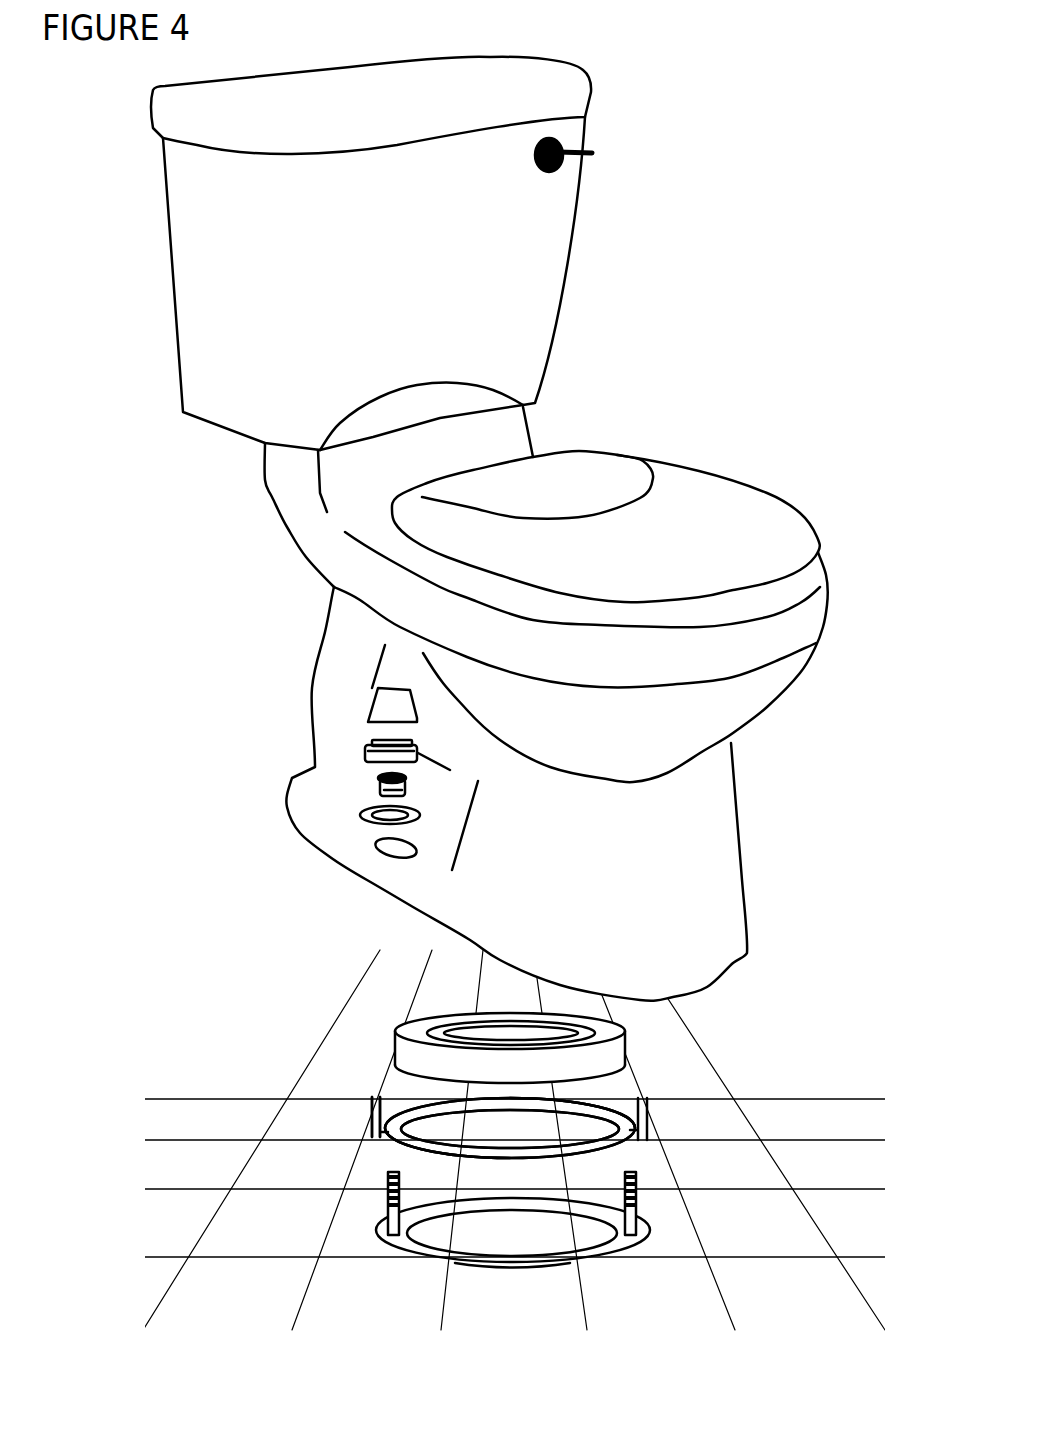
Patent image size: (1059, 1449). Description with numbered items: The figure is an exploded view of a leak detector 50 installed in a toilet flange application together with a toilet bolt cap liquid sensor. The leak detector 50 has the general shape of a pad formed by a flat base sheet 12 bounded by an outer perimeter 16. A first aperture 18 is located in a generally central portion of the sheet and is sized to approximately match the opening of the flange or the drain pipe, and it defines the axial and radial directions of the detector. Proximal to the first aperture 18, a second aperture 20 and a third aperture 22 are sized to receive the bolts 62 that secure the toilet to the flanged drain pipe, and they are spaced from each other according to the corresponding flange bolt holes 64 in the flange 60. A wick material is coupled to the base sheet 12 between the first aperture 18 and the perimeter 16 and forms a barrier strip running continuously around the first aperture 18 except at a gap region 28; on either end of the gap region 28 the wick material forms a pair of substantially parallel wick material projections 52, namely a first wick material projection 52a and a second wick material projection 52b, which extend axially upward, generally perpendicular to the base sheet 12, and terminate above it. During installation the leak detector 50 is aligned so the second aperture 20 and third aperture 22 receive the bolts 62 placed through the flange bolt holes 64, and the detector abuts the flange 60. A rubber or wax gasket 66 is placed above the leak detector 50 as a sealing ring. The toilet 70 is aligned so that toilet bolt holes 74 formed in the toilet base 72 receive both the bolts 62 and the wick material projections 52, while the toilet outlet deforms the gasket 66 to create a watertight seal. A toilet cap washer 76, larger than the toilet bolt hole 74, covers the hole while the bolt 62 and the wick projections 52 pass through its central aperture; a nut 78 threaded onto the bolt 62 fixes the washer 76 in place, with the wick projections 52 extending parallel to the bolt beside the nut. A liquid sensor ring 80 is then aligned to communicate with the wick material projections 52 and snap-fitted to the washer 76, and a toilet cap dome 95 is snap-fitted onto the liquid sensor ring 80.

The base sheet 12 is at (423, 1141).
The outer perimeter 16 is at (605, 1105).
The first aperture 18 is at (573, 1127).
The second aperture 20 is at (395, 1138).
The third aperture 22 is at (627, 1110).
The gap region 28 is at (647, 1140).
The leak detector 50 is at (712, 1135).
The wick material projection 52 is at (361, 1134).
The first wick material projection 52a is at (374, 1116).
The second wick material projection 52b is at (381, 1097).
The flange 60 is at (454, 1266).
The bolt 62 is at (637, 1203).
The flange bolt hole 64 is at (637, 1237).
The rubber or wax gasket 66 is at (395, 1053).
The toilet 70 is at (780, 925).
The toilet base 72 is at (487, 933).
The toilet bolt hole 74 is at (397, 855).
The toilet cap washer 76 is at (367, 817).
The nut 78 is at (377, 780).
The liquid sensor ring 80 is at (367, 747).
The toilet cap dome 95 is at (377, 690).